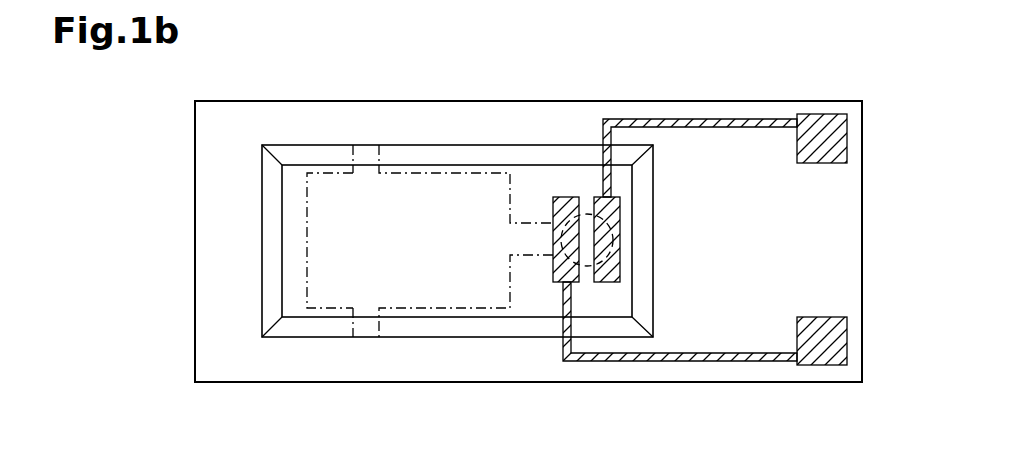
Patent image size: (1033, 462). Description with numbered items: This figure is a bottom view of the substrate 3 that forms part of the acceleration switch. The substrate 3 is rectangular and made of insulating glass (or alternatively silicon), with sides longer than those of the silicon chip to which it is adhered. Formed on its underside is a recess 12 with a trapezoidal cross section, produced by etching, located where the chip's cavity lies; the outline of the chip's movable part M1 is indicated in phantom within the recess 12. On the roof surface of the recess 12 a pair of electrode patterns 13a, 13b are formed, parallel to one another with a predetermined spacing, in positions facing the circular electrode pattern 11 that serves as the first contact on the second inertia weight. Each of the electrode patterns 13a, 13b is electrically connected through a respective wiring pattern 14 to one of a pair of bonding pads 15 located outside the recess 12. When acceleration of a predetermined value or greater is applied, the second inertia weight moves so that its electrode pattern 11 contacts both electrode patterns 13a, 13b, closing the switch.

The substrate 3 is at (862, 236).
The recess 12 is at (292, 243).
The movable part M1 is at (415, 305).
The wiring patterns 14 is at (751, 127).
The bonding pads 15 is at (832, 118).
The electrode pattern 13a is at (612, 205).
The electrode pattern 13b is at (571, 285).
The electrode pattern 11 is at (610, 232).